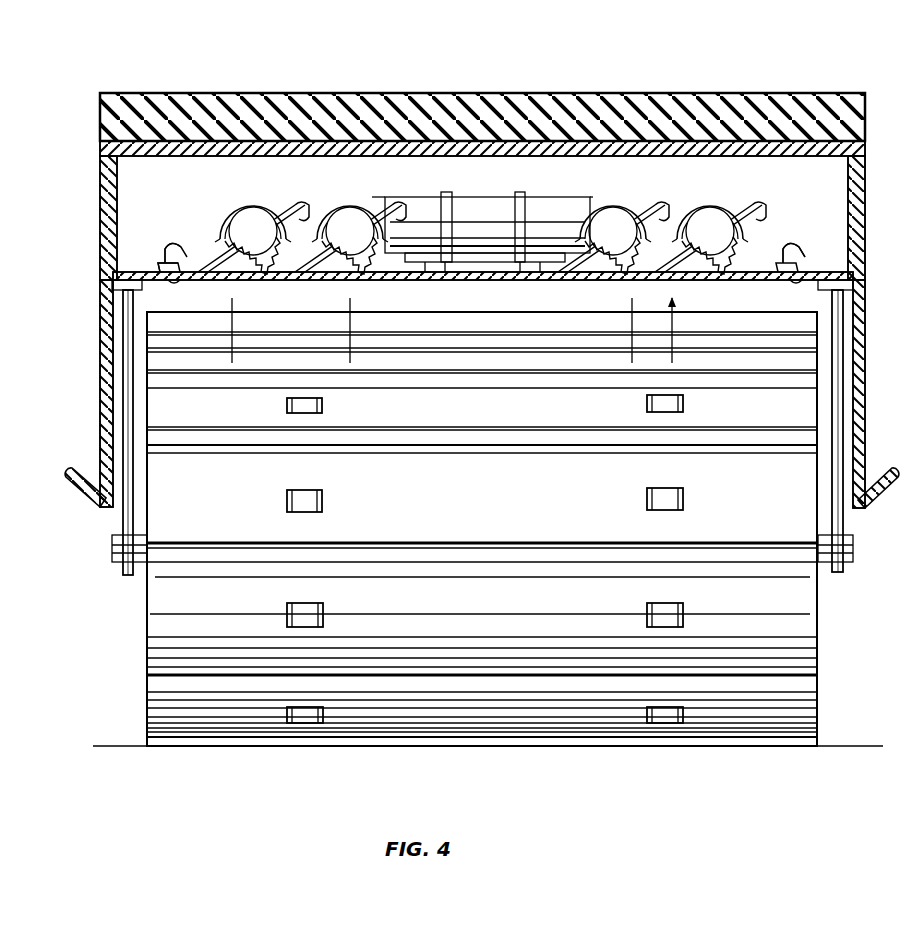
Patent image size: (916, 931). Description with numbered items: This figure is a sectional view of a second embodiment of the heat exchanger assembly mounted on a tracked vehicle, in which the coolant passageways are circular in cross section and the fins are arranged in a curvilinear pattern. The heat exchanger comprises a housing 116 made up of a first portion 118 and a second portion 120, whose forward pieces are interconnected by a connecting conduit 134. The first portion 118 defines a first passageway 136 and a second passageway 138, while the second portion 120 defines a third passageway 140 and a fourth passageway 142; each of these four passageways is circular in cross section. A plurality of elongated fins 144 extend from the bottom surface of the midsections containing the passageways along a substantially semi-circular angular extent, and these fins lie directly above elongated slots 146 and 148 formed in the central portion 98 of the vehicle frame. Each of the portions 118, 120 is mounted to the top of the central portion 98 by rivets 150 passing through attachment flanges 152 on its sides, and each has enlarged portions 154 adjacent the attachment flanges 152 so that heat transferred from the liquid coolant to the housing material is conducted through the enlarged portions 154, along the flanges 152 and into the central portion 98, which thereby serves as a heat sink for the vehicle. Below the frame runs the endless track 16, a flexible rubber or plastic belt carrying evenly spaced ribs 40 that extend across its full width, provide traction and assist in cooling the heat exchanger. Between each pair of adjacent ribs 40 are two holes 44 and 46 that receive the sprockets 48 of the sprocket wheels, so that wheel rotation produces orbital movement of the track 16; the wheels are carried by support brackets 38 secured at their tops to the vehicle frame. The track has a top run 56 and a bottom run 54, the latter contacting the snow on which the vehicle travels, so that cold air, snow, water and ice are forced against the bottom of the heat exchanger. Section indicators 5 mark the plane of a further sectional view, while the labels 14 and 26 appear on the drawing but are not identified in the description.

The section line 5- 5 is at (147, 182).
The housing wall 14 is at (882, 152).
The endless track 16 is at (138, 590).
The top housing slab 26 is at (592, 92).
The support brackets 38 is at (122, 522).
The spaced ribs 40 is at (817, 580).
The hole 44 is at (680, 498).
The hole 46 is at (319, 498).
The sprockets 48 is at (290, 498).
The bottom run 54 is at (680, 750).
The top run 56 is at (690, 312).
The central portion 98 is at (823, 270).
The housing 116 is at (355, 190).
The first portion 118 is at (224, 212).
The second portion 120 is at (766, 184).
The connecting conduit 134 is at (482, 198).
The first passageway 136 is at (252, 224).
The second passageway 138 is at (357, 226).
The third passageway 140 is at (644, 226).
The fourth passageway 142 is at (713, 224).
The elongated fins 144 is at (287, 262).
The elongated slot 146 is at (402, 270).
The elongated slot 148 is at (564, 272).
The rivets 150 is at (182, 264).
The attachment flanges 152 is at (173, 266).
The enlarged portions 154 is at (785, 248).